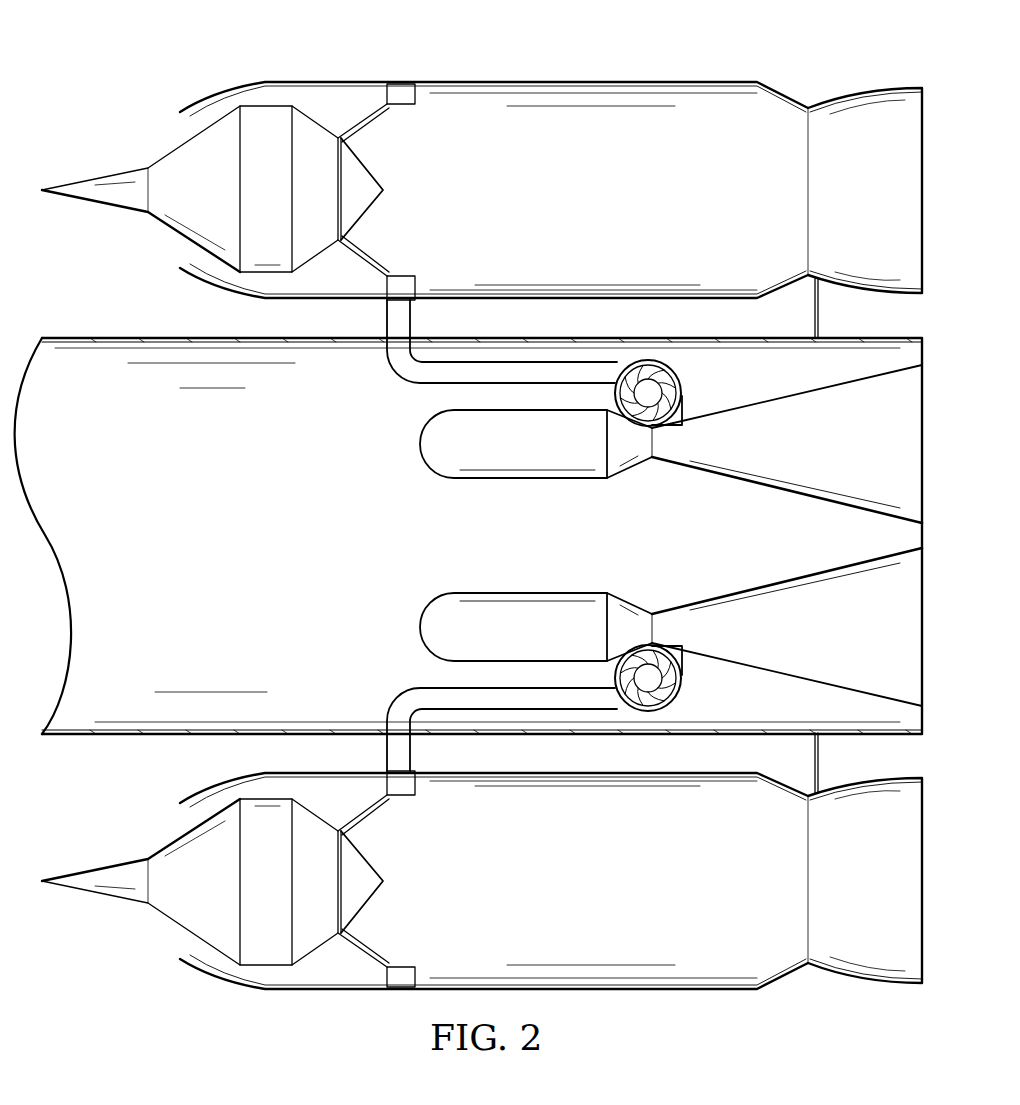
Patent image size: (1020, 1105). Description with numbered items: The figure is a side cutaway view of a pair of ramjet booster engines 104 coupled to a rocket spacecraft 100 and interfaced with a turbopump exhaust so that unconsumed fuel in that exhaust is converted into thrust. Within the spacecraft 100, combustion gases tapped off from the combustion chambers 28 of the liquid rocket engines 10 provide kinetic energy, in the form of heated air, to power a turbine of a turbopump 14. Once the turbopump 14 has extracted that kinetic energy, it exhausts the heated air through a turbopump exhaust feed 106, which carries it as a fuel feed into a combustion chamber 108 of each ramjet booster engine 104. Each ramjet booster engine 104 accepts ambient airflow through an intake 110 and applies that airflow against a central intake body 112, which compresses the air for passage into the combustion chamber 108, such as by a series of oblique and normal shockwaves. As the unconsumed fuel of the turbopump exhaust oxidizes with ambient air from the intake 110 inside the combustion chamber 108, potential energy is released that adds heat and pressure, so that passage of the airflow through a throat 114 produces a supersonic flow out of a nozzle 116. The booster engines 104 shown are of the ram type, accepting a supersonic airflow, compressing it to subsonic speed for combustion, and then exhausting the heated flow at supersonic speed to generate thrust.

The liquid rocket engine 10 is at (889, 460).
The turbopump 14 is at (683, 386).
The combustion chamber 28 is at (425, 441).
The rocket spacecraft 100 is at (100, 327).
The ramjet booster engine 104 is at (655, 80).
The turbopump exhaust feed 106 is at (399, 698).
The combustion chamber 108 is at (609, 893).
The intake 110 is at (147, 936).
The central intake body 112 is at (166, 846).
The throat 114 is at (801, 964).
The nozzle 116 is at (897, 986).